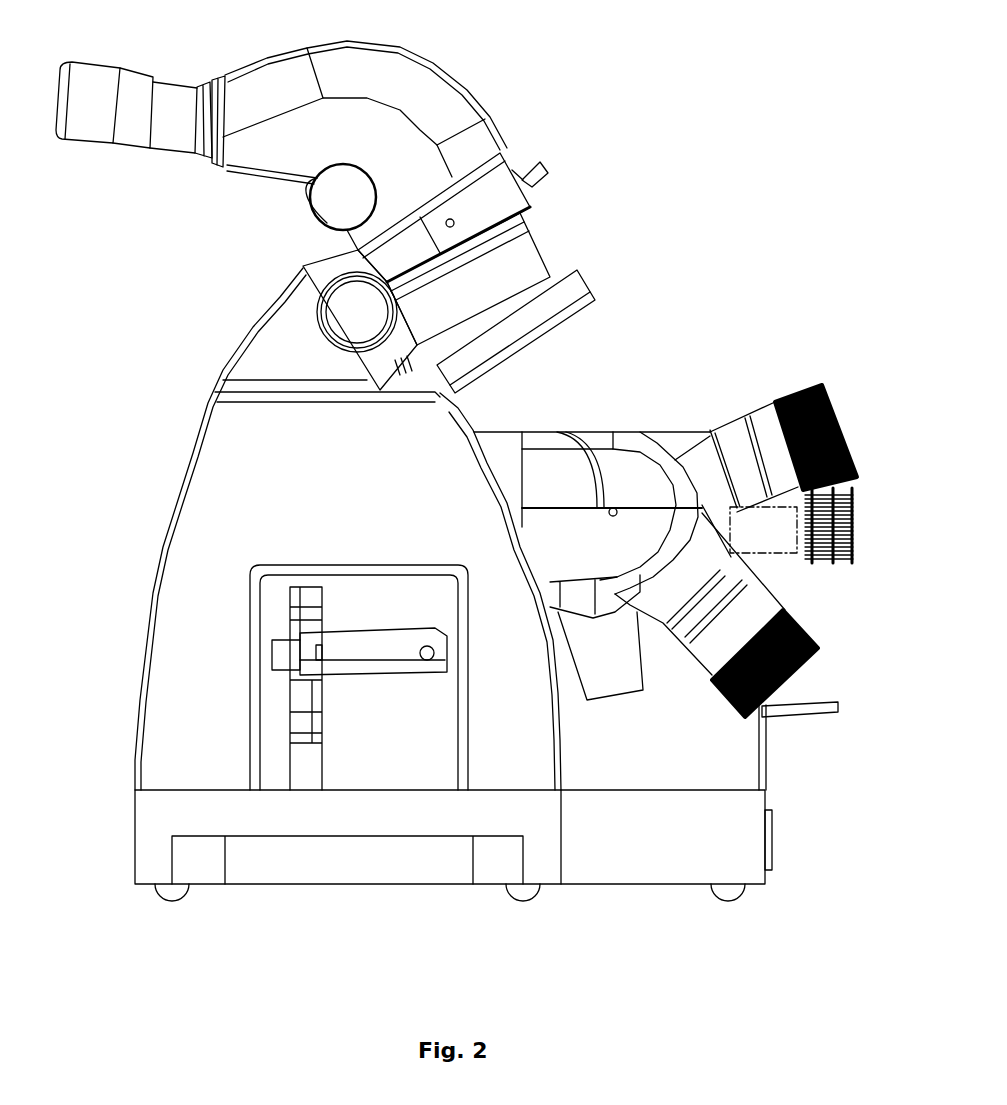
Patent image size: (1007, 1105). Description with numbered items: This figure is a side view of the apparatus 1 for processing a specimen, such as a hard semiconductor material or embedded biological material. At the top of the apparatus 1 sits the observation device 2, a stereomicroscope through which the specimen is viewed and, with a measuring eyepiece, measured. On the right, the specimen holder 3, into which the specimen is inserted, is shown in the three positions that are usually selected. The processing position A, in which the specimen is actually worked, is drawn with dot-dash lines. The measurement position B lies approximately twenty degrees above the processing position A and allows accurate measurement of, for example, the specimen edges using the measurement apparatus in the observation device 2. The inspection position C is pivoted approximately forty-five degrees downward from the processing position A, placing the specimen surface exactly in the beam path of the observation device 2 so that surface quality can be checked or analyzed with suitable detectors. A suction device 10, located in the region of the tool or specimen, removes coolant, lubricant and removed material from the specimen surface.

The apparatus 1 is at (607, 212).
The observation device 2 is at (425, 98).
The specimen holder 3 is at (755, 430).
The suction device 10 is at (603, 680).
The processing position A is at (873, 565).
The measurement position B is at (791, 380).
The inspection position C is at (808, 685).